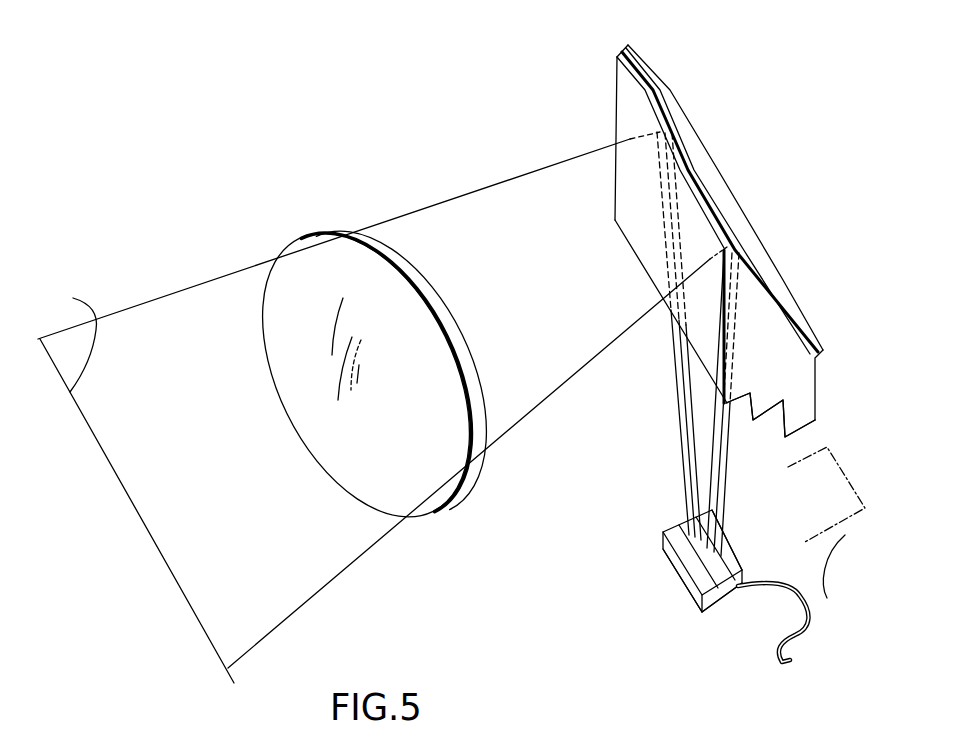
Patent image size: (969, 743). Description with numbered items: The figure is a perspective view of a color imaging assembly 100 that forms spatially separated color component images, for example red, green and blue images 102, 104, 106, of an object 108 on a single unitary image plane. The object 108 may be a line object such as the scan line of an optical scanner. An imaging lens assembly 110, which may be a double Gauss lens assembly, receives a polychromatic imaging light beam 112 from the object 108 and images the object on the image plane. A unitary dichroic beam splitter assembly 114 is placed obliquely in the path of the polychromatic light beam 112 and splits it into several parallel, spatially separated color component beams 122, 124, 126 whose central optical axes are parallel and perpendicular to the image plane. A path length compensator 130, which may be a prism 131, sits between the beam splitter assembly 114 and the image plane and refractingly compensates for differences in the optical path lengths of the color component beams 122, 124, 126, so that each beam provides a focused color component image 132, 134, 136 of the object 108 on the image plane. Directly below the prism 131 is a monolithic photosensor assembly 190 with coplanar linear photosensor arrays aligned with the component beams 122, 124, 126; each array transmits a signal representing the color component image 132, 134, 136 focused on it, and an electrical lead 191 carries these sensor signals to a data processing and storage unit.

The color imaging assembly 100 is at (335, 113).
The red image 102 is at (744, 567).
The green image 104 is at (723, 600).
The blue image 106 is at (687, 593).
The object 108 is at (72, 325).
The imaging lens assembly 110 is at (337, 232).
The polychromatic imaging light beam 112 is at (200, 307).
The unitary dichroic beam splitter assembly 114 is at (653, 70).
The color component beam 122 is at (732, 443).
The color component beam 124 is at (698, 515).
The color component beam 126 is at (710, 527).
The path length compensator 130 is at (818, 400).
The prism 131 is at (789, 341).
The focused color component image 132 is at (677, 522).
The focused color component image 134 is at (676, 542).
The focused color component image 136 is at (692, 567).
The monolithic photosensor assembly 190 is at (690, 608).
The electrical lead 191 is at (798, 642).